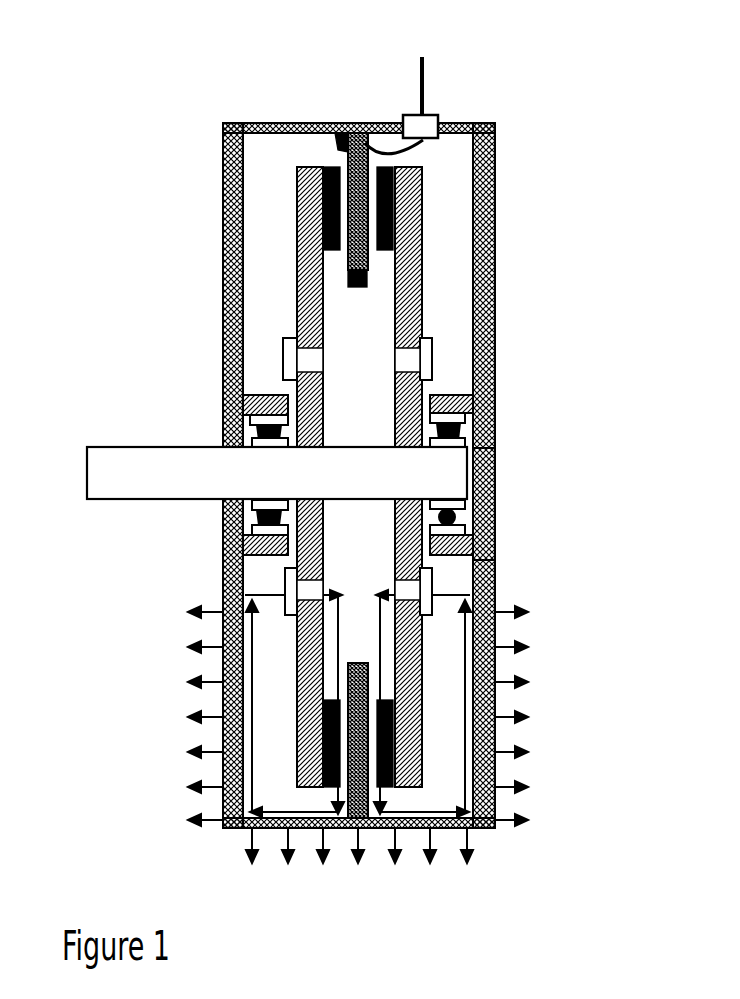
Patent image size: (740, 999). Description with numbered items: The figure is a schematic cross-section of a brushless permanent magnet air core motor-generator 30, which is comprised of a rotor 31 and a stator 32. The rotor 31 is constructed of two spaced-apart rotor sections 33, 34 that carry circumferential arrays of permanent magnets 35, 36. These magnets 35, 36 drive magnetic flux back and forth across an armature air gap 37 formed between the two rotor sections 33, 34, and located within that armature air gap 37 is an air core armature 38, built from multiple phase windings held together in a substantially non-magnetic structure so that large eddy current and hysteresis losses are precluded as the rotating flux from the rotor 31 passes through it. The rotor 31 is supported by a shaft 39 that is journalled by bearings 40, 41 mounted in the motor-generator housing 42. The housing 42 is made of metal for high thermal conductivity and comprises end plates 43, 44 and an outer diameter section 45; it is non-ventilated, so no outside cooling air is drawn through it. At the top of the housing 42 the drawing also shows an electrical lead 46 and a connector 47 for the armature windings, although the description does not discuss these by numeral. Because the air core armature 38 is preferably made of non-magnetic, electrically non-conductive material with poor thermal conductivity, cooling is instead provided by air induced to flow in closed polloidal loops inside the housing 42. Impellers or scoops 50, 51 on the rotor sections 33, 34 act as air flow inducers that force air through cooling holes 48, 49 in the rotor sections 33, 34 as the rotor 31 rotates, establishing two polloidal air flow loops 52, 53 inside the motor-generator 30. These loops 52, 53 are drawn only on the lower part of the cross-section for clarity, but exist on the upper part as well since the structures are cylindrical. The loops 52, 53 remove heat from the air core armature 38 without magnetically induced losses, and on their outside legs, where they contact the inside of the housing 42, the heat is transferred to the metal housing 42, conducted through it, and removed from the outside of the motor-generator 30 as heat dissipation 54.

The motor-generator 30 is at (130, 52).
The rotor 31 is at (436, 284).
The stator 32 is at (333, 132).
The rotor section 33 is at (422, 237).
The rotor section 34 is at (297, 258).
The permanent magnets 35 is at (420, 183).
The permanent magnets 36 is at (300, 177).
The armature air gap 37 is at (338, 268).
The air core armature 38 is at (356, 288).
The shaft 39 is at (113, 447).
The bearing 40 is at (243, 425).
The bearing 41 is at (495, 430).
The motor-generator housing 42 is at (502, 570).
The end plate 43 is at (495, 508).
The end plate 44 is at (223, 567).
The outer diameter section 45 is at (450, 830).
The electrical lead 46 is at (428, 75).
The connector 47 is at (406, 116).
The cooling hole 48 is at (337, 368).
The cooling hole 49 is at (384, 358).
The impeller or scoop 50 is at (283, 358).
The impeller or scoop 51 is at (432, 358).
The polloidal air flow loop 52 is at (348, 605).
The polloidal air flow loop 53 is at (374, 600).
The heat dissipation 54 is at (505, 712).